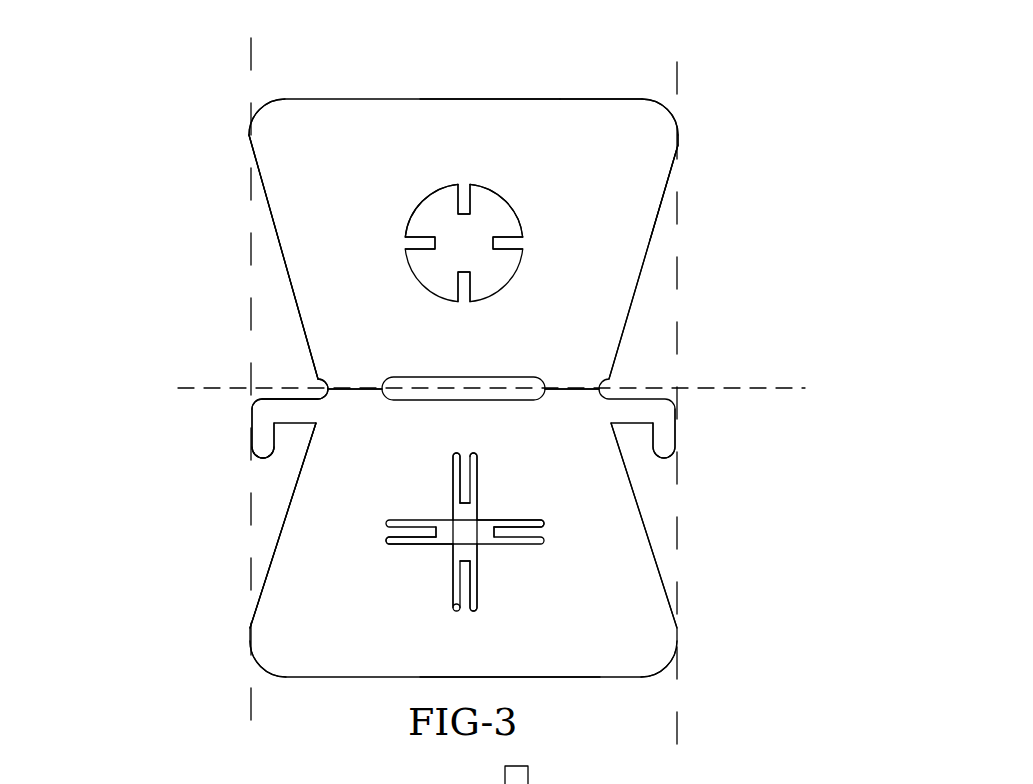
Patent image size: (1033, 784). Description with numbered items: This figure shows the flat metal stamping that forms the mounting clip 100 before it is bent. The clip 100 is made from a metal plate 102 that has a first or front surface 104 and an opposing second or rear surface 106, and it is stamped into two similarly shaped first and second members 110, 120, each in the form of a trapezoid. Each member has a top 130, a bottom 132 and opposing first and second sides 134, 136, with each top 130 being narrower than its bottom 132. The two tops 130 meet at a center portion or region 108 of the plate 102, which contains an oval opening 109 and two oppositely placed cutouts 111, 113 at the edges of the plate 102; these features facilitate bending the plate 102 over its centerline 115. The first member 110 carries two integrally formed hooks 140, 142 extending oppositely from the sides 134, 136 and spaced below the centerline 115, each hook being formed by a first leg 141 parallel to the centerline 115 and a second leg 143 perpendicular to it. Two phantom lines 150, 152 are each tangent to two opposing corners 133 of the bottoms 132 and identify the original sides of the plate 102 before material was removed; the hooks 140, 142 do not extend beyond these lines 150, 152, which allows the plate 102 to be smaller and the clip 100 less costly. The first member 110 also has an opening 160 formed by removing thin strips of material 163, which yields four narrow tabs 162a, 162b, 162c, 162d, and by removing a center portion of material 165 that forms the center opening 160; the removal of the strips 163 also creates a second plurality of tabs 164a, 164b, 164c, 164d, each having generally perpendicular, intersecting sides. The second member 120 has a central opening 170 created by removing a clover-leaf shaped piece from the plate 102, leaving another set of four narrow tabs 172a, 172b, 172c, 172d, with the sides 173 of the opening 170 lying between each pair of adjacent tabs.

The mounting clip 100 is at (210, 69).
The metal plate 102 is at (592, 92).
The first or front surface 104 is at (635, 172).
The second or rear surface 106 is at (610, 221).
The center portion or region 108 is at (315, 381).
The oval opening 109 is at (418, 376).
The first member 110 is at (304, 510).
The cutout 111 is at (353, 387).
The cutout 113 is at (603, 383).
The centerline 115 is at (198, 393).
The second member 120 is at (286, 181).
The top 130 is at (478, 365).
The bottom 132 is at (486, 99).
The corner 133 is at (305, 117).
The first side 134 is at (292, 237).
The second side 136 is at (625, 252).
The hook 140 is at (268, 427).
The first leg 141 is at (285, 410).
The hook 142 is at (663, 432).
The second leg 143 is at (262, 452).
The phantom line 150 is at (246, 306).
The phantom line 152 is at (680, 692).
The opening 160 is at (457, 530).
The narrow tab 162a is at (478, 580).
The narrow tab 162b is at (511, 520).
The narrow tab 162c is at (460, 476).
The narrow tab 162d is at (420, 530).
The thin strips of material 163 is at (443, 512).
The tab 164a is at (490, 555).
The tab 164b is at (485, 518).
The tab 164c is at (458, 505).
The tab 164d is at (449, 550).
The center portion of material 165 is at (467, 528).
The central opening 170 is at (457, 250).
The narrow tab 172a is at (472, 287).
The narrow tab 172b is at (510, 242).
The narrow tab 172c is at (463, 203).
The narrow tab 172d is at (425, 243).
The sides of opening 173 is at (420, 205).